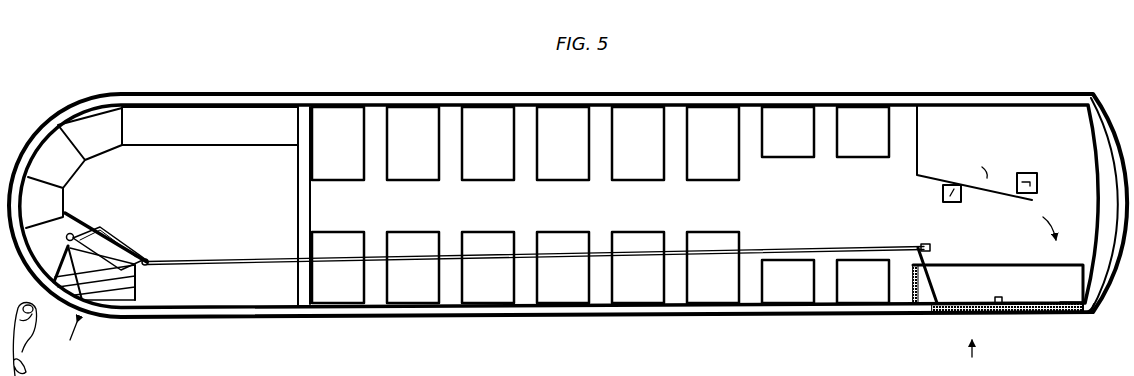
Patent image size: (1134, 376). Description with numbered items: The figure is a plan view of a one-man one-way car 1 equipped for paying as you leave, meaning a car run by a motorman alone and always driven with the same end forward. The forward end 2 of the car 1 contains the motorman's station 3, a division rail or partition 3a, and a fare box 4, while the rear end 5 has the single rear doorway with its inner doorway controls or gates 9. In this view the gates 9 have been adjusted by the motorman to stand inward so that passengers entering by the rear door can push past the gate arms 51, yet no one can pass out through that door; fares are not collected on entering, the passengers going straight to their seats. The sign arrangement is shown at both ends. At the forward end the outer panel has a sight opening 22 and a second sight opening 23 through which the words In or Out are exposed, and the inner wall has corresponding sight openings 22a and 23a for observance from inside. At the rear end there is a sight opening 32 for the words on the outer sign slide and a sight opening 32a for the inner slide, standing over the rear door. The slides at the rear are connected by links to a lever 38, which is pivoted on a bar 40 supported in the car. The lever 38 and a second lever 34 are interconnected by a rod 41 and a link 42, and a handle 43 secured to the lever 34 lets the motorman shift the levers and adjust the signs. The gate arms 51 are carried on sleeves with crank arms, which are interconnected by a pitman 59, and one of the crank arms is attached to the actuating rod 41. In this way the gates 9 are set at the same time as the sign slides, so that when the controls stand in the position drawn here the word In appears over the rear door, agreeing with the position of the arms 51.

The one-man one-way car 1 is at (428, 108).
The forward end 2 is at (997, 125).
The motorman's station 3 is at (1040, 182).
The division rail or partition 3a is at (998, 188).
The fare box 4 is at (957, 187).
The rear end 5 is at (197, 186).
The inner doorway controls or gates 9 is at (108, 243).
The sight opening 22 is at (1035, 316).
The sight opening 22a is at (1044, 303).
The sight opening 23 is at (949, 316).
The sight opening 23a is at (957, 303).
The sight opening 32 is at (80, 311).
The sight opening 32a is at (113, 279).
The lever 34 is at (928, 266).
The lever 38 is at (60, 256).
The bar 40 is at (129, 288).
The rod 41 is at (212, 262).
The link 42 is at (144, 258).
The handle 43 is at (930, 247).
The arms 51 is at (146, 205).
The pitman 59 is at (80, 224).